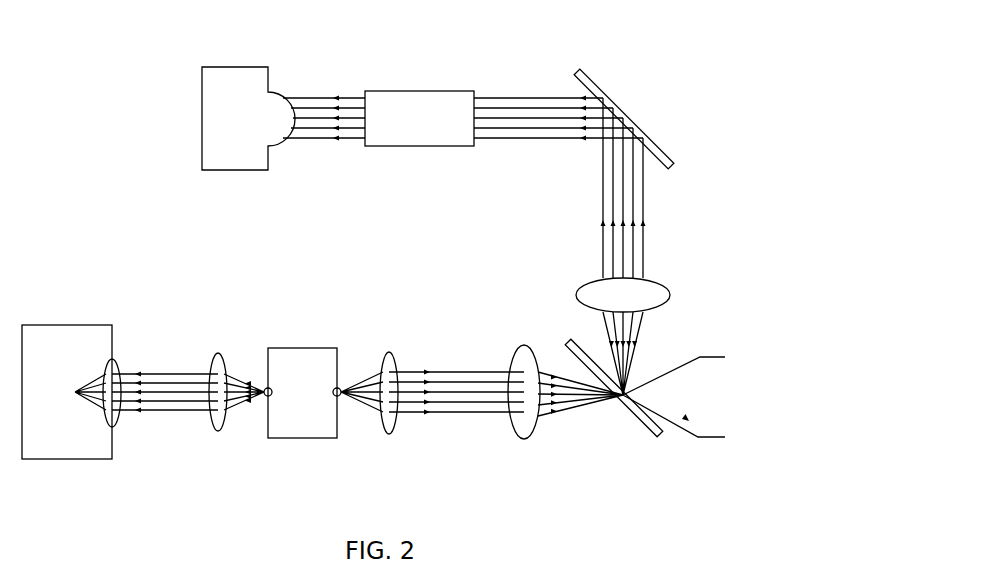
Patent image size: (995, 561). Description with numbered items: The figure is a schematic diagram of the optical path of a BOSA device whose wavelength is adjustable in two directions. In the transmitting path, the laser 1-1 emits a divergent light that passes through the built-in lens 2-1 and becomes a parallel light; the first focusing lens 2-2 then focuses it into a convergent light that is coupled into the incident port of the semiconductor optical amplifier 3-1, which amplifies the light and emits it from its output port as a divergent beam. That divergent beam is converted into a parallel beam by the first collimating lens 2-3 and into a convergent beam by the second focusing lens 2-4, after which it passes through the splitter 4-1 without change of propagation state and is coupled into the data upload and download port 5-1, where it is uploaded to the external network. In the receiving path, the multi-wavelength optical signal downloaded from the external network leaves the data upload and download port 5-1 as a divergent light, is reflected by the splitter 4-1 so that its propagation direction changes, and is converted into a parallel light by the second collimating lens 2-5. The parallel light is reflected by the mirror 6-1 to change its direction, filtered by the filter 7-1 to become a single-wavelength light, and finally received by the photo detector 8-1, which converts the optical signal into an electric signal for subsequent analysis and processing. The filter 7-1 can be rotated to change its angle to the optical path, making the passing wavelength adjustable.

The laser 1-1 is at (55, 343).
The built-in lens 2-1 is at (113, 405).
The first focusing lens 2-2 is at (222, 405).
The first collimating lens 2-3 is at (392, 405).
The second focusing lens 2-4 is at (522, 405).
The second collimating lens 2-5 is at (618, 288).
The semiconductor optical amplifier (SOA) 3-1 is at (312, 405).
The splitter 4-1 is at (628, 408).
The data upload and download port 5-1 is at (707, 408).
The mirror 6-1 is at (595, 85).
The filter 7-1 is at (430, 103).
The photo detector 8-1 is at (240, 85).